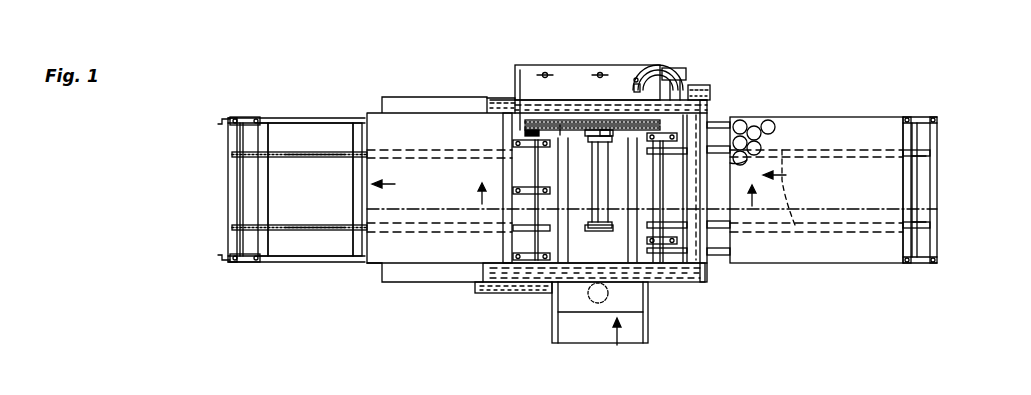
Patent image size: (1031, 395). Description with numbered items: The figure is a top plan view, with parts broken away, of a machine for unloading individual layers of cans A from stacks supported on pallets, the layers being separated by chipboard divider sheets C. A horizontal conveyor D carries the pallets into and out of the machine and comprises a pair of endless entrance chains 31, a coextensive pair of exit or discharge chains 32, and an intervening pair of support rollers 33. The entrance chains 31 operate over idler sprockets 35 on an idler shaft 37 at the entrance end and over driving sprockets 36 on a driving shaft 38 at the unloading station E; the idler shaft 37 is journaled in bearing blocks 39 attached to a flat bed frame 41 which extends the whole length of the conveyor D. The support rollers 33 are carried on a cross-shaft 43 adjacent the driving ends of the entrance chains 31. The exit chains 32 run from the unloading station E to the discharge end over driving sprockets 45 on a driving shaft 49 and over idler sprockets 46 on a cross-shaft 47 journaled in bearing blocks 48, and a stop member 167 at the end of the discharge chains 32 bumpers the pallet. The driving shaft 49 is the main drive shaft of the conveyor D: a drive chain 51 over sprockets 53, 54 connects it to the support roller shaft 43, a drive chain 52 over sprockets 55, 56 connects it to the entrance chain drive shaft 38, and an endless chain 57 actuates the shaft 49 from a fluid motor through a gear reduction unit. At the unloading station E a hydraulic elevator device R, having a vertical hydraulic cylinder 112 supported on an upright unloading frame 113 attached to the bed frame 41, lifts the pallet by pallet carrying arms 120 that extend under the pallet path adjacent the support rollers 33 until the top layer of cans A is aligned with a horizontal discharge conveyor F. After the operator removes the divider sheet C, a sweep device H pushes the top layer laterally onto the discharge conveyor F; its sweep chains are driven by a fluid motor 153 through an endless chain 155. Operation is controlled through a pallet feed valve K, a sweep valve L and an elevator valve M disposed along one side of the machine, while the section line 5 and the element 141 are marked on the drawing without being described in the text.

The section line 5 is at (616, 185).
The endless entrance chains 31 is at (797, 187).
The exit or discharge chains 32 is at (288, 152).
The support rollers 33 is at (596, 130).
The idler sprockets 35 is at (932, 153).
The driving sprockets 36 is at (660, 168).
The idler shaft 37 is at (912, 189).
The driving shaft 38 is at (660, 188).
The bearing blocks 39 is at (920, 118).
The bed frame 41 is at (937, 212).
The cross-shaft 43 is at (600, 177).
The driving sprockets 45 is at (513, 143).
The idler sprockets 46 is at (232, 155).
The cross-shaft 47 is at (237, 185).
The bearing blocks 48 is at (252, 108).
The driving shaft 49 is at (540, 246).
The endless drive chain 51 is at (548, 130).
The endless drive chain 52 is at (572, 130).
The sprocket 53 is at (528, 132).
The sprocket 54 is at (612, 130).
The sprocket 55 is at (530, 118).
The sprocket 56 is at (662, 116).
The endless chain 57 is at (495, 292).
The hydraulic cylinder 112 is at (599, 303).
The unloading frame 113 is at (704, 283).
The pallet carrying arms 120 is at (566, 202).
The frame 141 is at (367, 174).
The fluid motor 153 is at (686, 70).
The endless chain 155 is at (710, 86).
The stop member 167 is at (218, 121).
The cans or containers A is at (760, 133).
The chipboard divider sheets C is at (845, 255).
The horizontal conveyor D is at (912, 156).
The unloading station E is at (688, 288).
The discharge conveyor F is at (398, 247).
The sweep device H is at (712, 251).
The pallet feed valve K is at (545, 72).
The sweep valve L is at (601, 72).
The elevator valve M is at (638, 80).
The hydraulic elevator device R is at (616, 345).